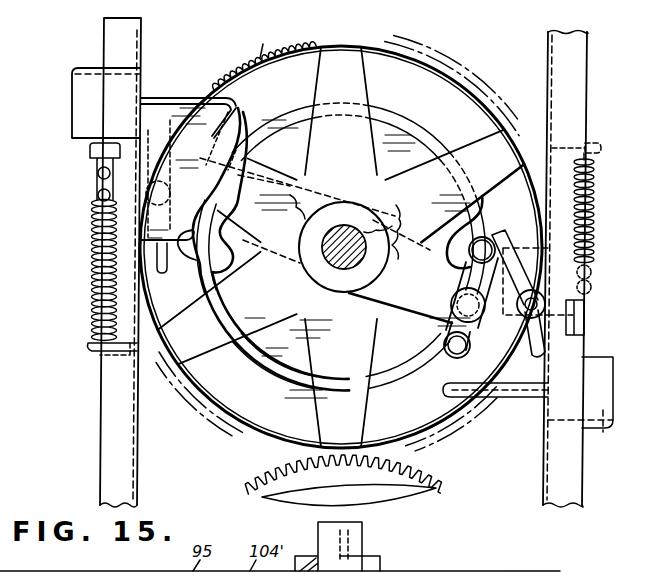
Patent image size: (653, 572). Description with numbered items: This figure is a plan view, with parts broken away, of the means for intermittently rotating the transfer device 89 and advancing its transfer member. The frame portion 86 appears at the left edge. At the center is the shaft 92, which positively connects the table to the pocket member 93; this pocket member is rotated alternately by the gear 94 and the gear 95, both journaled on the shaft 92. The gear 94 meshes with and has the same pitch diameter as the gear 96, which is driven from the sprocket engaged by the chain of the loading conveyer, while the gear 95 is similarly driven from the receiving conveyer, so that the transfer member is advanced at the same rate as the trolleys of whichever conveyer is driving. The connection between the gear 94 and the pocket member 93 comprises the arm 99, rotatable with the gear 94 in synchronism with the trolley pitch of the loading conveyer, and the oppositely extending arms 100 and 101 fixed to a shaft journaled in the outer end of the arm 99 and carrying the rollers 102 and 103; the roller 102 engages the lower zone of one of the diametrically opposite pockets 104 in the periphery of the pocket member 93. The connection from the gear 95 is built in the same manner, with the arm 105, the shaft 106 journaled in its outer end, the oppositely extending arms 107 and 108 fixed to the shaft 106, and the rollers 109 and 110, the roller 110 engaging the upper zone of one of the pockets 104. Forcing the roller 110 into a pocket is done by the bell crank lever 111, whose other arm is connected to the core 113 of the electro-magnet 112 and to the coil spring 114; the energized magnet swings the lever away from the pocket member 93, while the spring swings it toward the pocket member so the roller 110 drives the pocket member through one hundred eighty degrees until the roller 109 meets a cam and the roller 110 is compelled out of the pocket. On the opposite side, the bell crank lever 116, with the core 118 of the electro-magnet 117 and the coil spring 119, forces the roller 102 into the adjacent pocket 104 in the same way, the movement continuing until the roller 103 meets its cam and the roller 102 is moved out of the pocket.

The frame (partial) 86 is at (10, 167).
The transfer device 89 is at (575, 558).
The shaft 92 is at (345, 269).
The pocket member 93 is at (298, 372).
The gear 94 is at (417, 440).
The gear 95 is at (460, 76).
The gear 96 is at (440, 481).
The arm 99 is at (243, 268).
The arm 100 is at (212, 135).
The arm 101 is at (252, 232).
The roller 102 is at (190, 253).
The roller 103 is at (237, 136).
The pocket 104 is at (252, 232).
The arm 105 is at (407, 300).
The shaft 106 is at (483, 323).
The arm 107 is at (458, 238).
The arm 108 is at (483, 344).
The roller 109 is at (454, 358).
The roller 110 is at (491, 240).
The bell crank lever 111 is at (507, 243).
The electro-magnet 112 is at (583, 409).
The core 113 is at (584, 330).
The coil spring 114 is at (590, 240).
The bell crank lever 116 is at (157, 258).
The electro-magnet 117 is at (72, 104).
The core 118 is at (92, 143).
The coil spring 119 is at (93, 226).